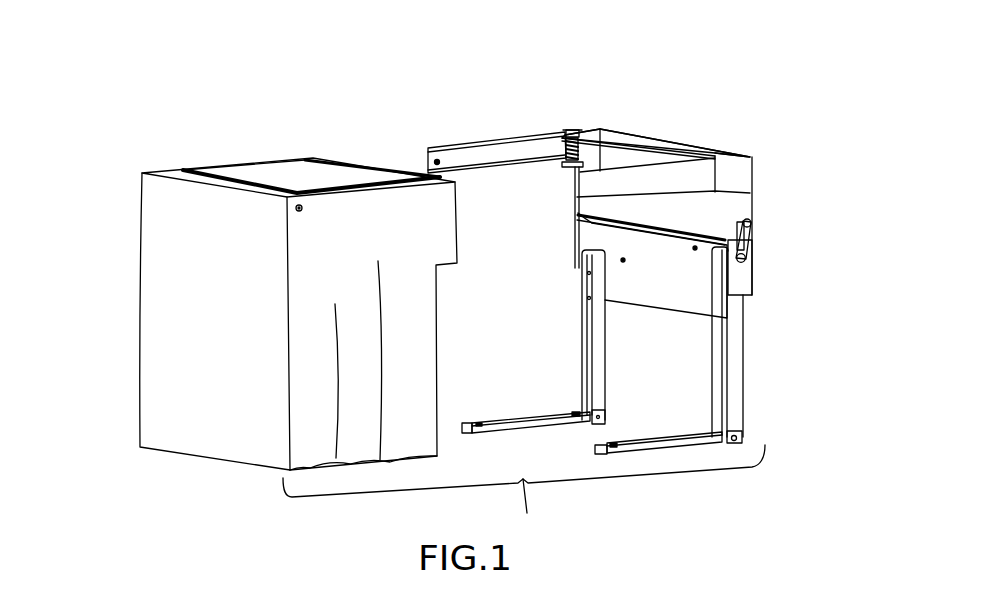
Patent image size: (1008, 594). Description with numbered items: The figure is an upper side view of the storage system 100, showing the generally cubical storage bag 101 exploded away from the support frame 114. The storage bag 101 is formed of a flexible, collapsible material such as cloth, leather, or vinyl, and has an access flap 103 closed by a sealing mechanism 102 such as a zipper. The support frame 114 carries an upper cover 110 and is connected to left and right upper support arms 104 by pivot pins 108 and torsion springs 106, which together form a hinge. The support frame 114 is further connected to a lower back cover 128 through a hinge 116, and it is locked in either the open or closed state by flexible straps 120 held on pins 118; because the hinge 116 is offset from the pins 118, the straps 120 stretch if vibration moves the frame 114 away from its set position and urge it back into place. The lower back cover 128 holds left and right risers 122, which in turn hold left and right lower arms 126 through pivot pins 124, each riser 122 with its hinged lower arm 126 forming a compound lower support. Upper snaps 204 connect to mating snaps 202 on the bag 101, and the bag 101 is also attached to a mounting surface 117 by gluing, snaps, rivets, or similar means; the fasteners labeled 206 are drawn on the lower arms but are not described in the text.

The storage system 100 is at (418, 150).
The storage bag 101 is at (208, 457).
The sealing mechanism 102 is at (192, 168).
The access flap 103 is at (268, 167).
The upper support arms 104 is at (500, 153).
The torsion springs 106 is at (568, 137).
The pivot pins 108 is at (573, 136).
The upper cover 110 is at (665, 143).
The support frame 114 is at (647, 133).
The hinge 116 is at (703, 231).
The mounting surface 117 is at (688, 218).
The pins 118 is at (749, 221).
The flexible straps 120 is at (752, 228).
The risers 122 is at (600, 368).
The pivot pins 124 is at (598, 418).
The lower arms 126 is at (602, 450).
The lower back cover 128 is at (637, 258).
The mating snaps 202 is at (296, 209).
The upper snaps 204 is at (438, 159).
The fastener 206 is at (575, 413).